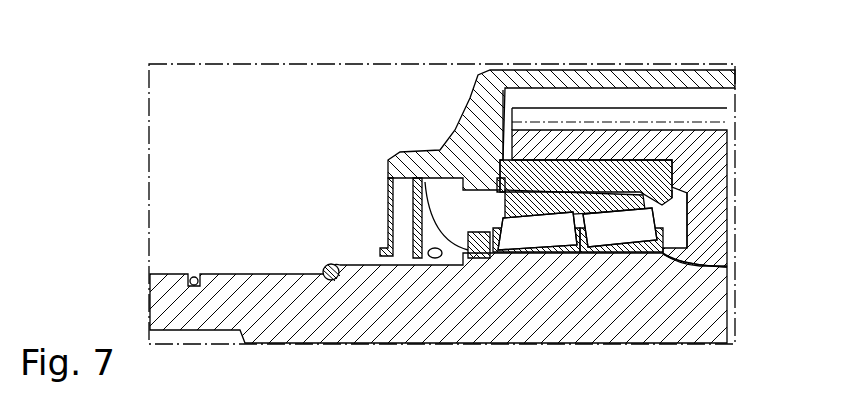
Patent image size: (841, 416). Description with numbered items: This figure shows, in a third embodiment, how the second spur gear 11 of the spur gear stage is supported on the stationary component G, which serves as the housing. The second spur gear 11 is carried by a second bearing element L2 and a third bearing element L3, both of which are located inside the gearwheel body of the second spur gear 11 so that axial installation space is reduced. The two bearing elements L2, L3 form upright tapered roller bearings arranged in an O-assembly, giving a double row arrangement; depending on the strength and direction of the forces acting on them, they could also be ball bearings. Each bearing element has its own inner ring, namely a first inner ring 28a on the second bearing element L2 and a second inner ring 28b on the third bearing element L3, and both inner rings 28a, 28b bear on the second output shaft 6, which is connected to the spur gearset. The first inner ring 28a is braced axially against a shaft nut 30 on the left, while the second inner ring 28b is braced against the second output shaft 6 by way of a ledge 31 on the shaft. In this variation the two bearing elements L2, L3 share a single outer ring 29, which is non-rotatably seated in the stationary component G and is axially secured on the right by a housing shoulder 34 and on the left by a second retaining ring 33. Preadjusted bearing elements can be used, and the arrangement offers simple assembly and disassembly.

The second output shaft 6 is at (228, 293).
The second spur gear 11 is at (688, 153).
The outer ring 29 is at (583, 183).
The first inner ring 28a is at (530, 253).
The second inner ring 28b is at (637, 253).
The second bearing element L2 is at (540, 178).
The third bearing element L3 is at (640, 180).
The second retaining ring 33 is at (500, 175).
The shaft nut 30 is at (436, 182).
The stationary component G is at (480, 72).
The housing shoulder 34 is at (650, 210).
The ledge 31 is at (663, 254).